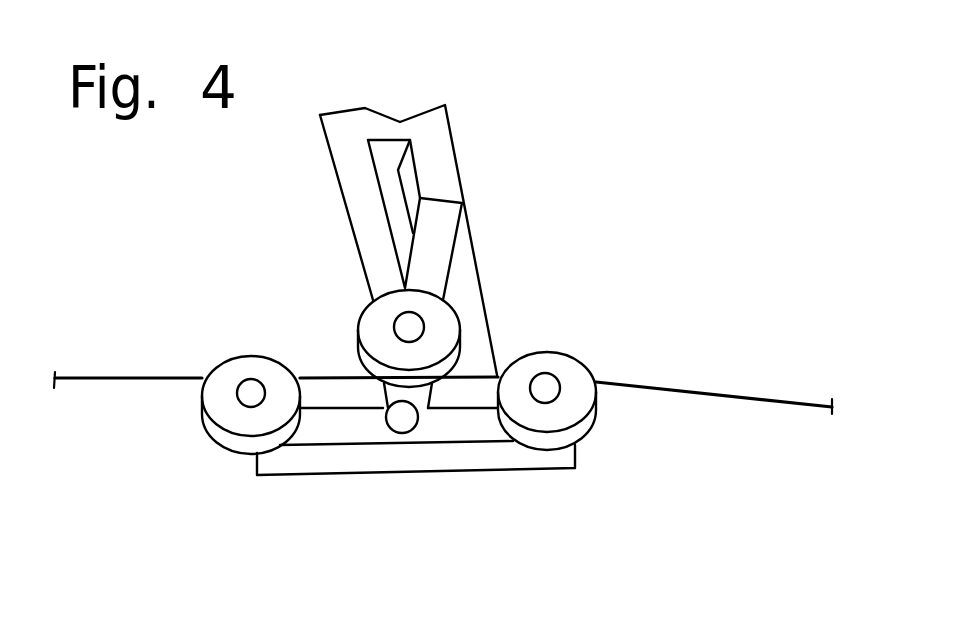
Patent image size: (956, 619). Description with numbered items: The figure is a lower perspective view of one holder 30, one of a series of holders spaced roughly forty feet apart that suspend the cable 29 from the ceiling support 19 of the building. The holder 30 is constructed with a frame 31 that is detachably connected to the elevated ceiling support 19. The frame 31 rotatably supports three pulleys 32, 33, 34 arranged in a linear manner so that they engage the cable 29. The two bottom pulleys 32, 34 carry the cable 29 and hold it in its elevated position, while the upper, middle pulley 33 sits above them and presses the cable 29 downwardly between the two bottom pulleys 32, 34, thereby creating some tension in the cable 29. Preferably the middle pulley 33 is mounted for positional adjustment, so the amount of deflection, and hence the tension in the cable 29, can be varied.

The ceiling support 19 is at (455, 137).
The cable 29 is at (797, 407).
The holder 30 is at (567, 162).
The frame 31 is at (397, 475).
The pulley 32 is at (200, 416).
The pulley 33 is at (360, 350).
The pulley 34 is at (570, 360).